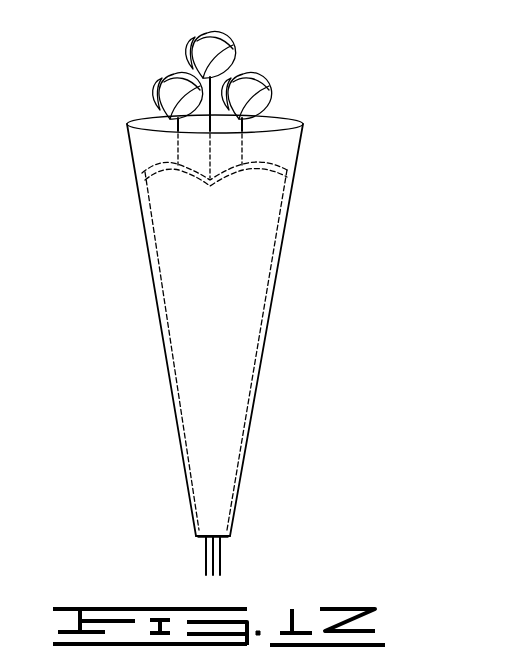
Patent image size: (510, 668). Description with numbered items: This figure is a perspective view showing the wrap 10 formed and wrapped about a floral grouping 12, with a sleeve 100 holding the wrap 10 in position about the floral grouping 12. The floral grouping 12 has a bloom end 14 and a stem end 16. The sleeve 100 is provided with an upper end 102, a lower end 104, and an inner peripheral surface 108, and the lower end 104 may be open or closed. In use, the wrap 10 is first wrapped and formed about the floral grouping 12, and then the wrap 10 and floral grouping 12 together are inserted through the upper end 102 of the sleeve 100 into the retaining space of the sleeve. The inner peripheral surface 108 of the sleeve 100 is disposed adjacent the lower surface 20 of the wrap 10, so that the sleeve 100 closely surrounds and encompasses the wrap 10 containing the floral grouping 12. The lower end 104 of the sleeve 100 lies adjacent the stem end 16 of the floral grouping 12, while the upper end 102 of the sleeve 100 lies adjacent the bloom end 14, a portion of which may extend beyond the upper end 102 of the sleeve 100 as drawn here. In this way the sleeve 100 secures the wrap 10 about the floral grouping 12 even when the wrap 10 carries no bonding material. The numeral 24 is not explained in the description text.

The floral grouping 12 is at (307, 72).
The bloom end 14 is at (146, 94).
The wrap 10 is at (270, 248).
The upper end 102 is at (288, 117).
The sleeve 100 is at (149, 248).
The lower surface 20 is at (265, 338).
The lower end 104 is at (222, 540).
The inner peripheral surface 108 is at (165, 312).
The lower opening 24 is at (203, 545).
The stem end 16 is at (201, 570).